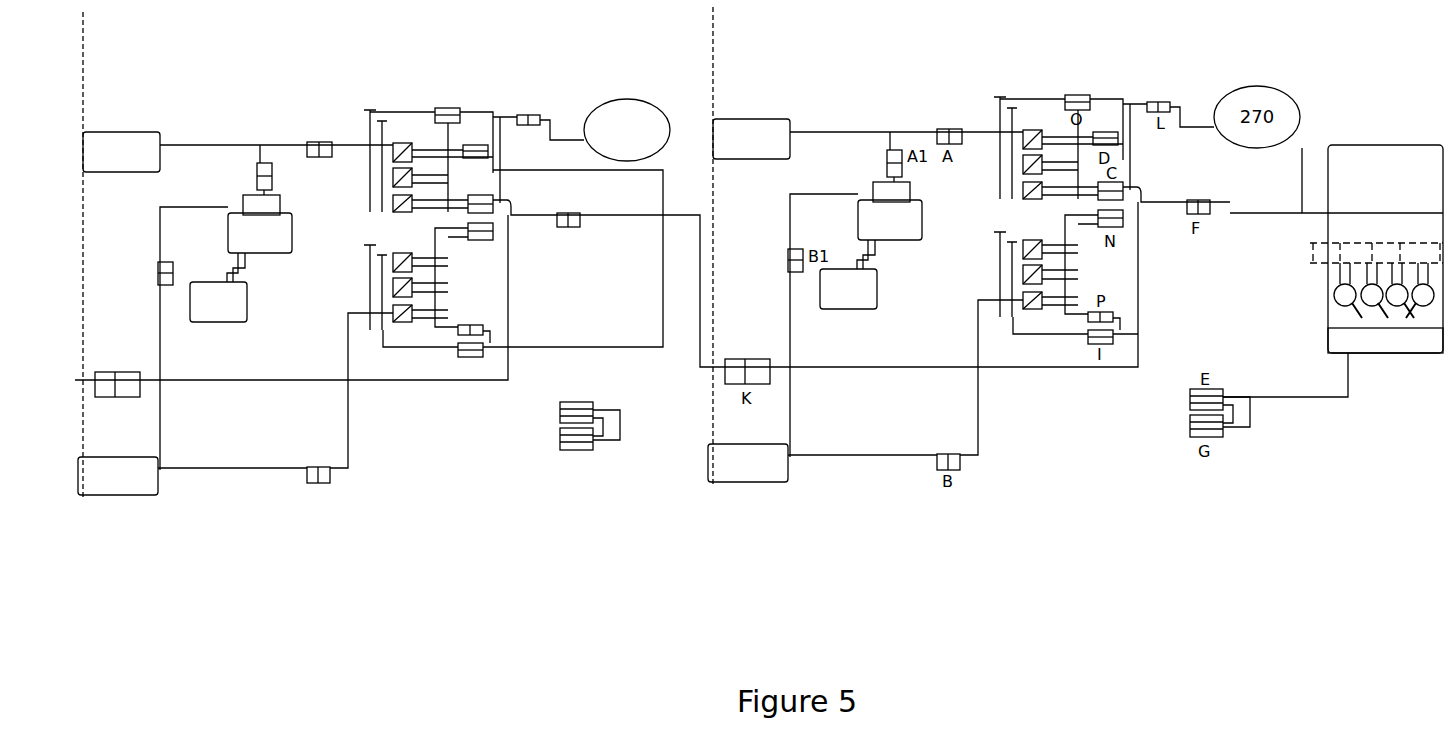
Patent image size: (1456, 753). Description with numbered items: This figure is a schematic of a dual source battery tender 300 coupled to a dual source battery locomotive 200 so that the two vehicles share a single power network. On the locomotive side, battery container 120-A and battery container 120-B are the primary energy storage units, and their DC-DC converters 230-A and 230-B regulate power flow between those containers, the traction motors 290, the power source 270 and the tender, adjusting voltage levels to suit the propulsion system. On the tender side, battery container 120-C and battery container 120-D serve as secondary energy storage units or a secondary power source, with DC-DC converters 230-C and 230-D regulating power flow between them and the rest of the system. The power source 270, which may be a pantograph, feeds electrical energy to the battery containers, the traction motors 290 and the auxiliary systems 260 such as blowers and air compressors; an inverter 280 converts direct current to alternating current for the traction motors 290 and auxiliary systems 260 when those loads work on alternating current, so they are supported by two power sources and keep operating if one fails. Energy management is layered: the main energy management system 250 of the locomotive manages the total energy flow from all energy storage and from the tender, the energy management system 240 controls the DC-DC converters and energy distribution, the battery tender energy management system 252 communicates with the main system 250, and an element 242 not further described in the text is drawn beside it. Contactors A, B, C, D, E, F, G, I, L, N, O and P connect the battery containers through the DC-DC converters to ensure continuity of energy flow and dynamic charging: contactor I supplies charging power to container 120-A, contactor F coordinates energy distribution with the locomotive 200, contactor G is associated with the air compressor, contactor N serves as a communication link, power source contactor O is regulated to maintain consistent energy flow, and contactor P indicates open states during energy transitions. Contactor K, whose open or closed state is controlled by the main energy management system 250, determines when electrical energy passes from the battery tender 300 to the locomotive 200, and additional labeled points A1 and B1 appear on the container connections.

The dual source battery tender 300 is at (129, 256).
The dual source battery locomotive 200 is at (1385, 234).
The battery container A 120-A is at (751, 139).
The battery container B 120-B is at (748, 463).
The battery container C 120-C is at (121, 152).
The battery container D 120-D is at (118, 476).
The DC-DC converter 230-A is at (970, 145).
The DC-DC converter 230-B is at (979, 274).
The DC-DC converter 230-C is at (392, 151).
The DC-DC converter 230-D is at (393, 322).
The energy management system (EMS) 240 is at (848, 289).
The controller 242 is at (218, 302).
The main energy management system 250 is at (890, 220).
The battery tender energy management system 252 is at (260, 233).
The auxiliary systems 260 is at (1385, 340).
The power source 270 is at (627, 130).
The inverter 280 is at (1425, 240).
The traction motors 290 is at (1384, 295).
The contactor A is at (319, 160).
The port A1 is at (277, 175).
The contactor B is at (318, 485).
The port B1 is at (178, 272).
The contactor C is at (480, 195).
The contactor D is at (475, 163).
The contactor E is at (576, 403).
The contactor F is at (568, 232).
The contactor G is at (576, 451).
The contactor I is at (470, 360).
The contactor K is at (117, 396).
The contactor L is at (528, 130).
The contactor N is at (480, 243).
The power source contactor O is at (447, 125).
The contactor P is at (470, 320).